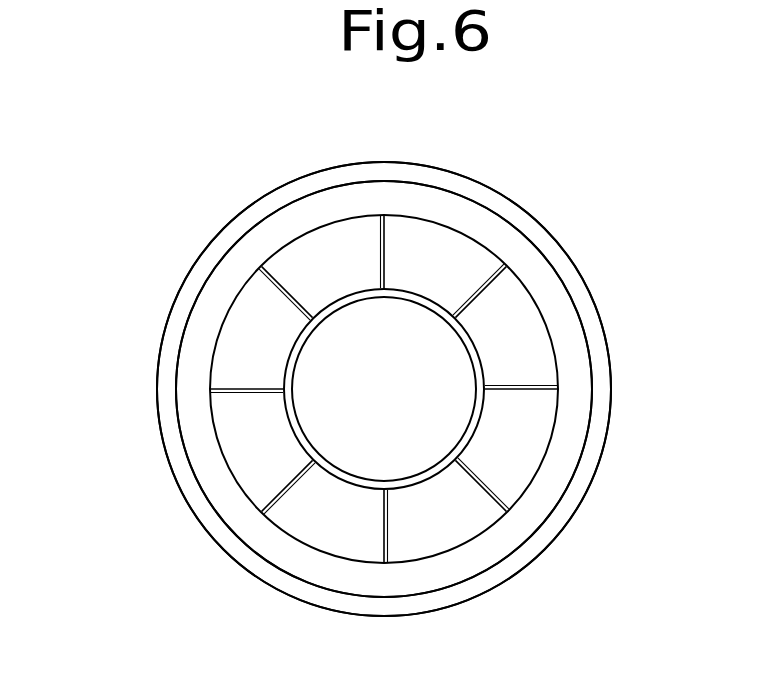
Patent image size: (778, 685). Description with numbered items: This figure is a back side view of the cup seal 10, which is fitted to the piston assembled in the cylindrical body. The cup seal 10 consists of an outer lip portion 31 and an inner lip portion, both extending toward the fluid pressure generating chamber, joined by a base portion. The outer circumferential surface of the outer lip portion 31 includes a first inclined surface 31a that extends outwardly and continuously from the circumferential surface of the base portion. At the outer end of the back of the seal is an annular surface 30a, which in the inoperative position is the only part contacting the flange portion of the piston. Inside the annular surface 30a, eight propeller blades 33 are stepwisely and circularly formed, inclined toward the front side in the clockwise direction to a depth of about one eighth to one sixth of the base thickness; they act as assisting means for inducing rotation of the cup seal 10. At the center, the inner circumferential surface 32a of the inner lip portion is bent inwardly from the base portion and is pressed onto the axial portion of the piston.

The cup seal 10 is at (557, 192).
The outer lip portion 31 is at (217, 247).
The first inclined surface 31a is at (563, 257).
The annular surface 30a is at (573, 398).
The inner circumferential surface 32a is at (467, 443).
The propeller blades 33 is at (327, 257).